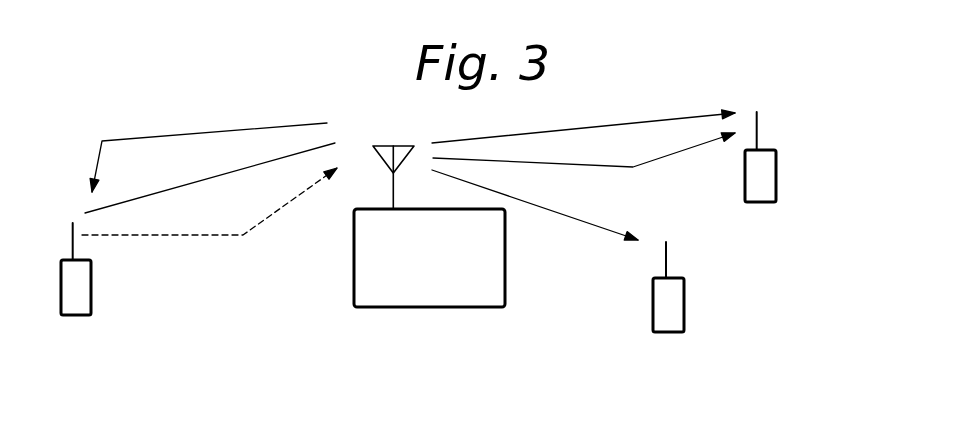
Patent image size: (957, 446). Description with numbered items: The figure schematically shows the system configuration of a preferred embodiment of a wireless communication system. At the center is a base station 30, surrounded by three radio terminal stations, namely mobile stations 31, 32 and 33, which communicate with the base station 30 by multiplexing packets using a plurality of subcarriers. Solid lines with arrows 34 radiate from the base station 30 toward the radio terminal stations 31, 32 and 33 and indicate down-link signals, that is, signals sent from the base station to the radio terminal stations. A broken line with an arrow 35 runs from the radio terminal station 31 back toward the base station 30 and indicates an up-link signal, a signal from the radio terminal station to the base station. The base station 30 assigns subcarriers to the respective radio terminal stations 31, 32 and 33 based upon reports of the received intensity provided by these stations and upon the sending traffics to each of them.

The base station 30 is at (457, 307).
The radio terminal station 31 is at (91, 287).
The radio terminal station 32 is at (684, 305).
The radio terminal station 33 is at (776, 175).
The down-link signal 34 is at (250, 167).
The up-link signal 35 is at (227, 237).